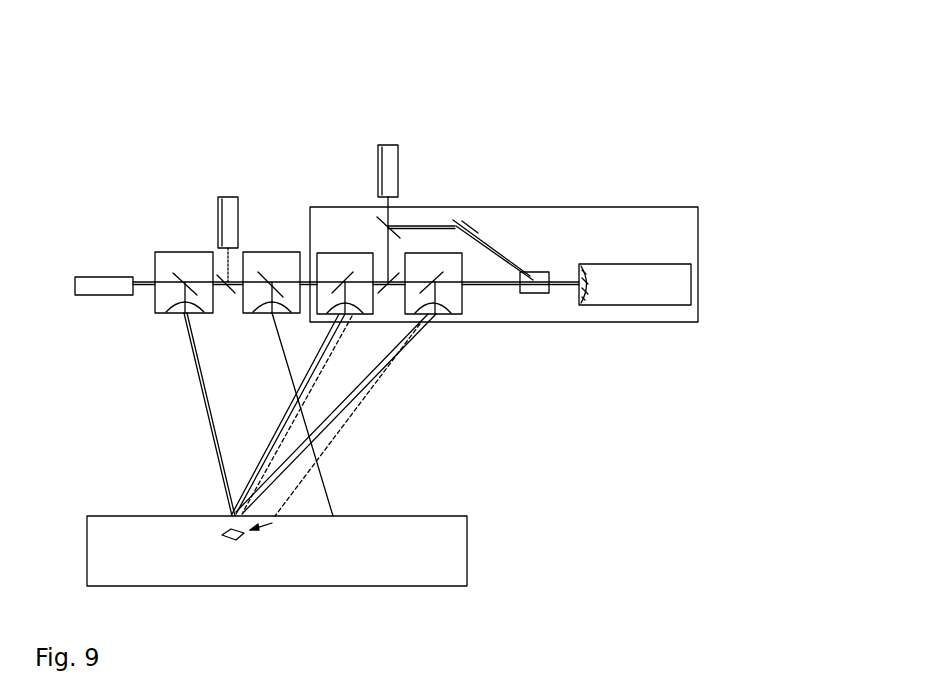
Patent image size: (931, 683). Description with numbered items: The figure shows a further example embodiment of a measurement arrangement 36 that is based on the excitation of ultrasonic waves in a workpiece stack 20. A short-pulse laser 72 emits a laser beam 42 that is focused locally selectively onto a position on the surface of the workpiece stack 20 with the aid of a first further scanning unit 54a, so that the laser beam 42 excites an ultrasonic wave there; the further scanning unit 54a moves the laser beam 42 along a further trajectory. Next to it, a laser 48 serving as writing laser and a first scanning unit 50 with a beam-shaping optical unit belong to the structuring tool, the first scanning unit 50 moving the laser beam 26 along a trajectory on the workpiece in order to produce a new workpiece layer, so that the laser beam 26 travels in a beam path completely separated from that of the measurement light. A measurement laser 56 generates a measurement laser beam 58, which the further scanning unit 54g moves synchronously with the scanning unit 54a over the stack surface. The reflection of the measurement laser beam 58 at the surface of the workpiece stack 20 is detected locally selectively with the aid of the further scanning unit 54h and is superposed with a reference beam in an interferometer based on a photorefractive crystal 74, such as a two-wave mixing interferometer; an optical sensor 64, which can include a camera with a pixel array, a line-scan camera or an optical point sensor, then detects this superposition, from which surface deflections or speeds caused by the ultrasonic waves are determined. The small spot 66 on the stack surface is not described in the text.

The measurement arrangement 36 is at (658, 90).
The short-pulse laser 72 is at (108, 277).
The first further scanning unit 54a is at (176, 252).
The laser 48 is at (226, 197).
The first scanning unit 50 is at (262, 252).
The optical sensor 64 is at (698, 278).
The further scanning unit 54g is at (334, 253).
The measurement laser 56 is at (388, 145).
The further scanning unit 54h is at (465, 297).
The photorefractive crystal 74 is at (528, 272).
The laser beam 42 is at (202, 391).
The laser beam 26 is at (328, 493).
The measurement laser beam 58 is at (282, 427).
The workpiece stack 20 is at (470, 545).
The measuring spot 66 is at (235, 541).